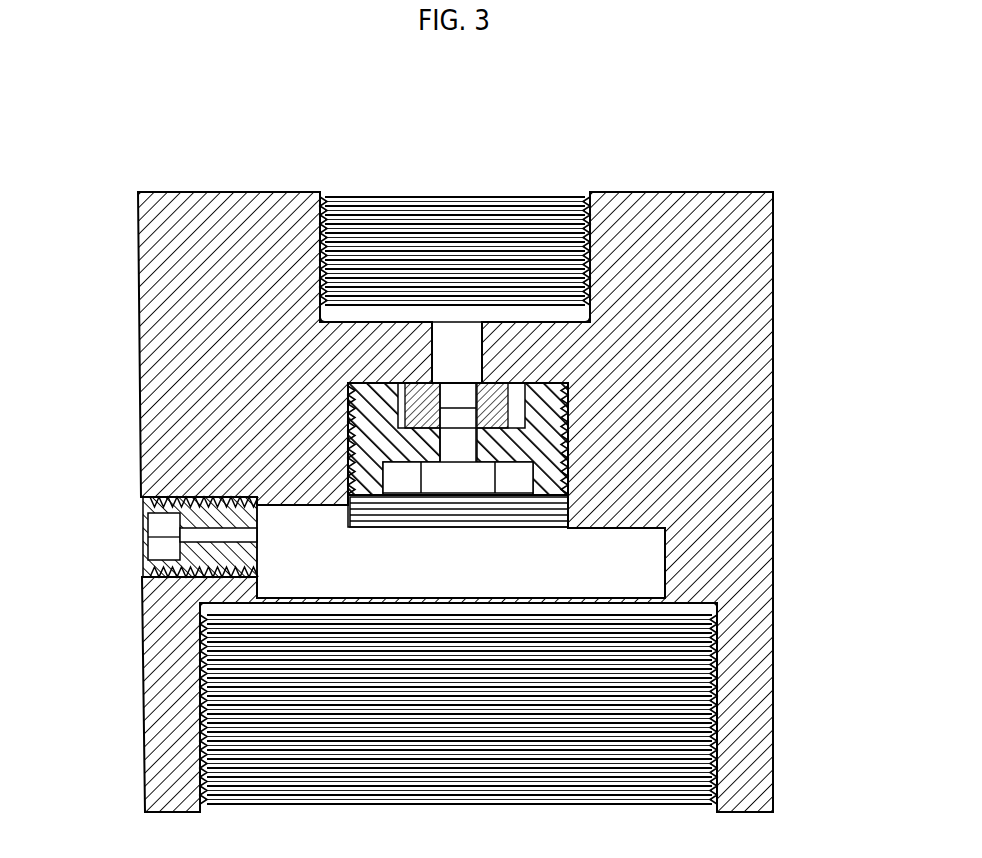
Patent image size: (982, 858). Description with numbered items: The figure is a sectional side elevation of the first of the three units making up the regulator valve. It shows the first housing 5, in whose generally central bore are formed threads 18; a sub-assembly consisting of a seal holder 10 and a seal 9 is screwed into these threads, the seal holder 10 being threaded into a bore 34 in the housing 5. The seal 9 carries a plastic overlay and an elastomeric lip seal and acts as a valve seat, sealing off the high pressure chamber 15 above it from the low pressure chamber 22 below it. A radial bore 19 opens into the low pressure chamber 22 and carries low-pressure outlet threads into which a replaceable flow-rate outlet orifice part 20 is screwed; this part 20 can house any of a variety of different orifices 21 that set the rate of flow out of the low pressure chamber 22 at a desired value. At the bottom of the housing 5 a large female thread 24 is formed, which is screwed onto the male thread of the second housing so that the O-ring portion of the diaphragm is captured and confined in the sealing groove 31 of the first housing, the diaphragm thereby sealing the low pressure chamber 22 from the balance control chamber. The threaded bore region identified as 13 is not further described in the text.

The first housing 5 is at (740, 256).
The seal 9 is at (492, 405).
The seal holder 10 is at (610, 401).
The upper threaded bore 13 is at (595, 212).
The high pressure chamber 15 is at (493, 222).
The threads 18 is at (307, 306).
The radial bore 19 is at (205, 485).
The replaceable flow-rate outlet orifice part 20 is at (202, 517).
The orifice 21 is at (196, 536).
The low pressure chamber 22 is at (282, 552).
The female thread 24 is at (200, 748).
The sealing groove 31 is at (693, 590).
The bore 34 is at (622, 436).